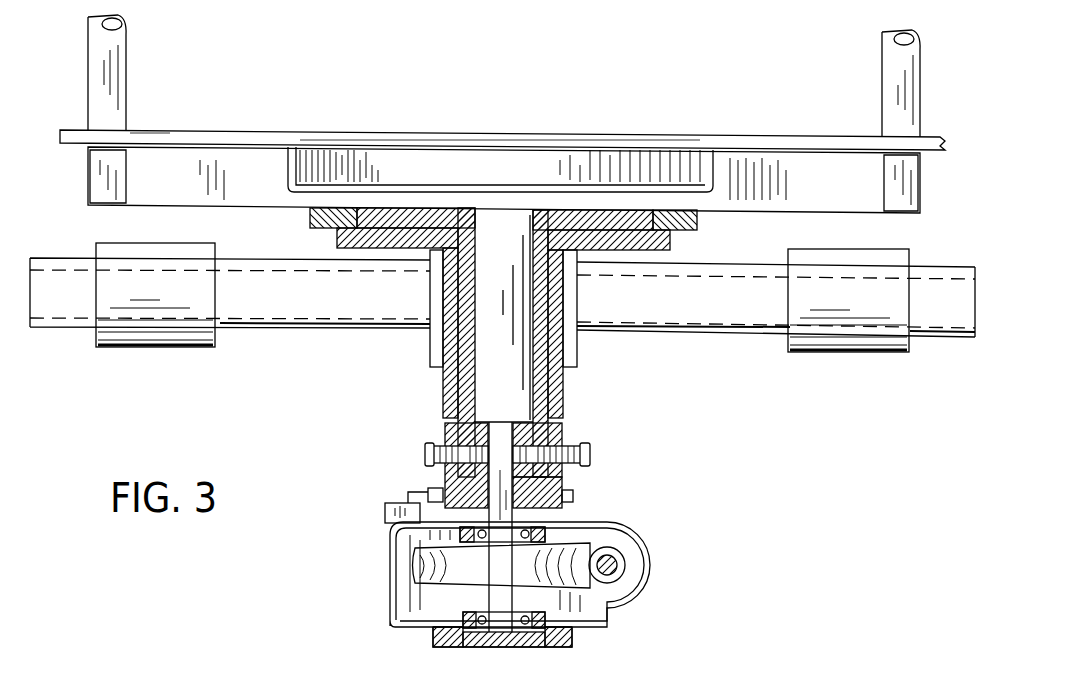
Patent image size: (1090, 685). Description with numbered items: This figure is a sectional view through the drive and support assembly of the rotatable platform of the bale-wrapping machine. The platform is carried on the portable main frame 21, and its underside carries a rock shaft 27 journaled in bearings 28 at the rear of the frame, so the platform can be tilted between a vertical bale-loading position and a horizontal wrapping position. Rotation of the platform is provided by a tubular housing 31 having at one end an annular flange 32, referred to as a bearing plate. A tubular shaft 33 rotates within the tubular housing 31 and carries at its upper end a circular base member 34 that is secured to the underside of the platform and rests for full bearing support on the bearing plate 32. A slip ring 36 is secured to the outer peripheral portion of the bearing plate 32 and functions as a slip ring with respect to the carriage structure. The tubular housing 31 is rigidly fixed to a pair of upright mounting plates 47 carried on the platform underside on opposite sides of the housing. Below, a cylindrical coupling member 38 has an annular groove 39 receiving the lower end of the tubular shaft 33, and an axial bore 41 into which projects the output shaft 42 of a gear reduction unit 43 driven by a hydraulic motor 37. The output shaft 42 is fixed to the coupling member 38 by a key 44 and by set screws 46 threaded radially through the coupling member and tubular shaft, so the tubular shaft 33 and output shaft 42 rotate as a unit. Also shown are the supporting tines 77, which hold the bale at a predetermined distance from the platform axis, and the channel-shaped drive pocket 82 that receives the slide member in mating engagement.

The main frame 21 is at (245, 134).
The rock shaft 27 is at (273, 308).
The bearings 28 is at (157, 325).
The tubular housing 31 is at (558, 409).
The annular flange (bearing plate) 32 is at (665, 243).
The tubular shaft 33 is at (467, 398).
The circular base member 34 is at (372, 212).
The slip ring 36 is at (668, 212).
The hydraulic motor 37 is at (617, 572).
The coupling member 38 is at (450, 477).
The annular groove 39 is at (555, 437).
The axial bore 41 is at (560, 508).
The output shaft 42 is at (545, 516).
The gear reduction unit 43 is at (393, 563).
The key 44 is at (520, 487).
The set screws 46 is at (425, 455).
The upright mounting plates 47 is at (432, 354).
The supporting tines 77 is at (110, 72).
The drive pocket 82 is at (562, 168).